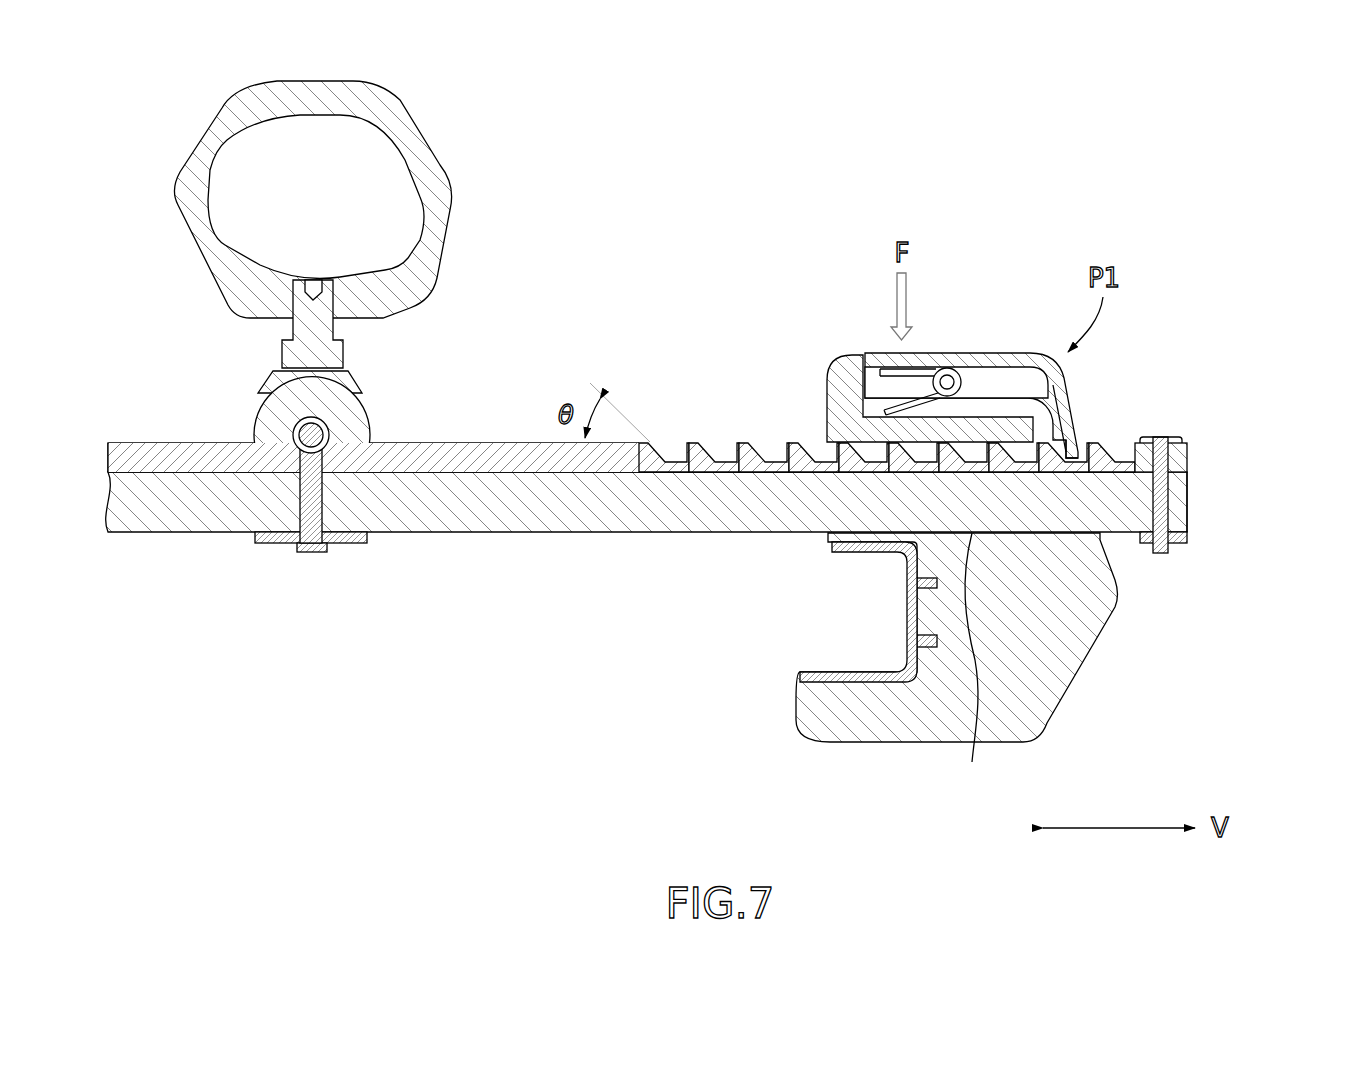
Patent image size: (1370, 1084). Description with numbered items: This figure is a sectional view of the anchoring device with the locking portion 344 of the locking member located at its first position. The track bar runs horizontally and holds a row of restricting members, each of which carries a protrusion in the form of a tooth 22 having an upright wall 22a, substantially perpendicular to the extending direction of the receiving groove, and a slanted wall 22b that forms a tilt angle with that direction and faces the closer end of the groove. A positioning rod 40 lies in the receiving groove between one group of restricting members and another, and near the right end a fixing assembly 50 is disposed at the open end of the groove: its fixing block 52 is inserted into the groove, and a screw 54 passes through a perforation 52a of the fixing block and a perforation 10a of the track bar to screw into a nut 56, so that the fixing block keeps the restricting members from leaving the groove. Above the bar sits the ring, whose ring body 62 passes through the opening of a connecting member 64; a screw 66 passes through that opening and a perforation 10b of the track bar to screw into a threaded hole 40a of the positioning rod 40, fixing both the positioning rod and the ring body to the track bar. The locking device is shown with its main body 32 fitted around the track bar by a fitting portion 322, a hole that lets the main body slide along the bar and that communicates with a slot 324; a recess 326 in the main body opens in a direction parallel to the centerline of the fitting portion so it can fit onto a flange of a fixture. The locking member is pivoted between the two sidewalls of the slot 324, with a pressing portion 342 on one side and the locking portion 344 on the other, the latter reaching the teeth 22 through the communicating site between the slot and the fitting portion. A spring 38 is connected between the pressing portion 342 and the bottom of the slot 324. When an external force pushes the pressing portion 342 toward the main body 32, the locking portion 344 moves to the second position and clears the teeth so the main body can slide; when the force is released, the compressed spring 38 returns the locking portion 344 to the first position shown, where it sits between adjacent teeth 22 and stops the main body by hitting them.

The perforation 10a is at (1152, 508).
The perforation 10b is at (330, 508).
The protrusion 22 is at (914, 387).
The upright wall 22a is at (717, 447).
The slanted wall 22b is at (729, 417).
The main body 32 is at (1067, 678).
The spring 38 is at (907, 373).
The positioning rod 40 is at (150, 450).
The threaded hole 40a is at (320, 458).
The fixing assembly 50 is at (1236, 487).
The fixing block 52 is at (1183, 462).
The perforation 52a is at (1209, 424).
The screw 54 is at (1162, 493).
The nut 56 is at (1175, 537).
The ring body 62 is at (435, 177).
The connecting member 64 is at (263, 412).
The screw 66 is at (307, 495).
The fitting portion 322 is at (970, 665).
The slot 324 is at (870, 407).
The recess 326 is at (843, 668).
The pressing portion 342 is at (882, 353).
The locking portion 344 is at (1073, 440).